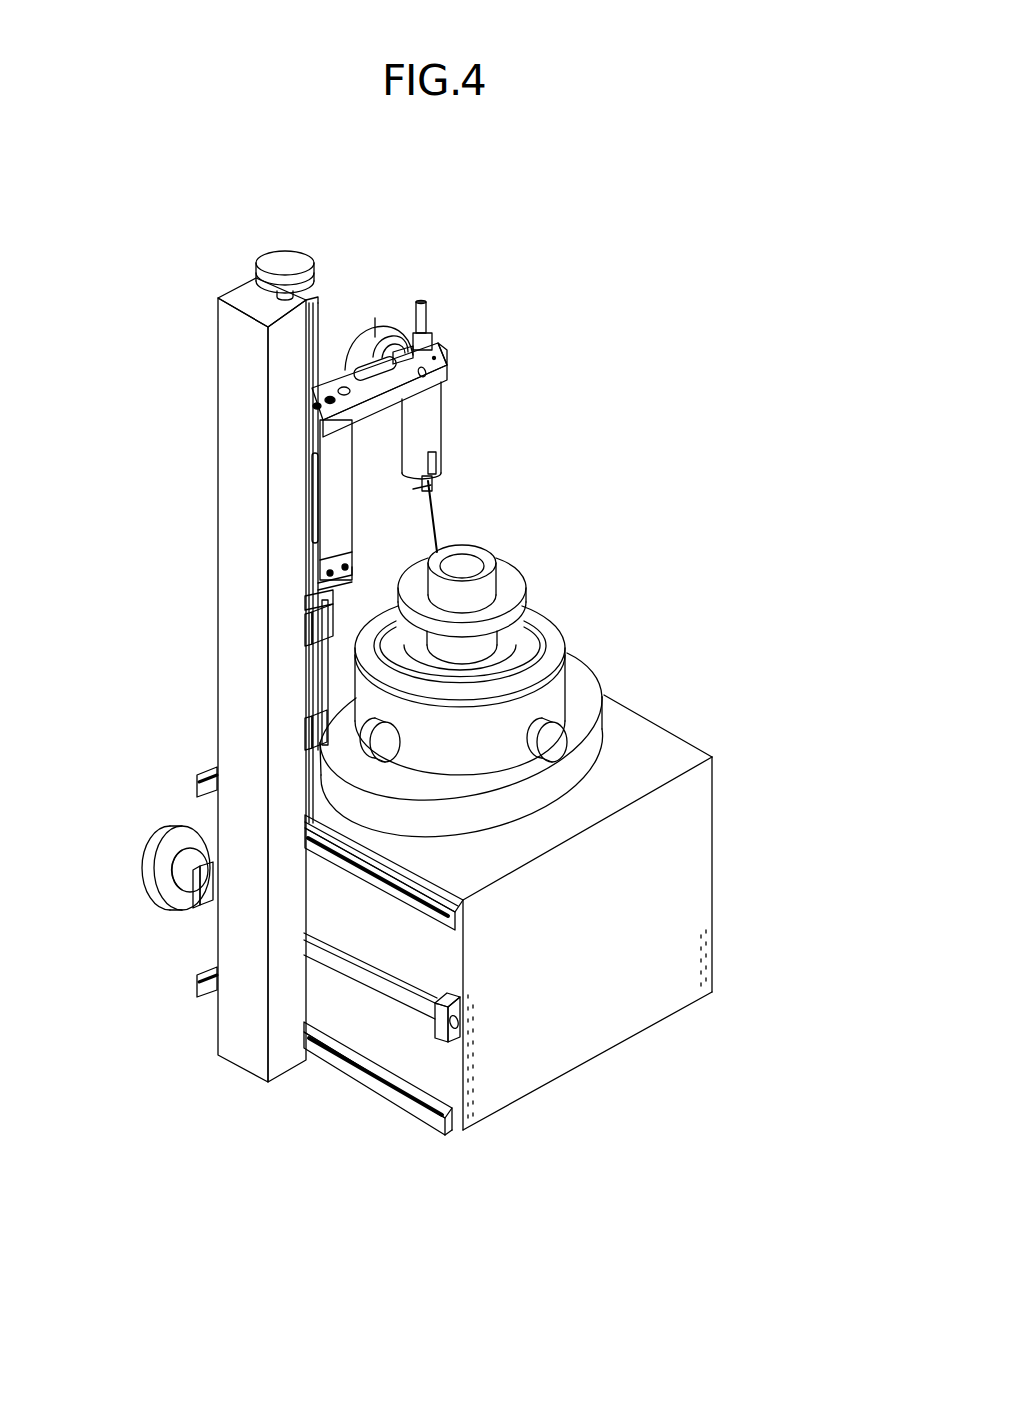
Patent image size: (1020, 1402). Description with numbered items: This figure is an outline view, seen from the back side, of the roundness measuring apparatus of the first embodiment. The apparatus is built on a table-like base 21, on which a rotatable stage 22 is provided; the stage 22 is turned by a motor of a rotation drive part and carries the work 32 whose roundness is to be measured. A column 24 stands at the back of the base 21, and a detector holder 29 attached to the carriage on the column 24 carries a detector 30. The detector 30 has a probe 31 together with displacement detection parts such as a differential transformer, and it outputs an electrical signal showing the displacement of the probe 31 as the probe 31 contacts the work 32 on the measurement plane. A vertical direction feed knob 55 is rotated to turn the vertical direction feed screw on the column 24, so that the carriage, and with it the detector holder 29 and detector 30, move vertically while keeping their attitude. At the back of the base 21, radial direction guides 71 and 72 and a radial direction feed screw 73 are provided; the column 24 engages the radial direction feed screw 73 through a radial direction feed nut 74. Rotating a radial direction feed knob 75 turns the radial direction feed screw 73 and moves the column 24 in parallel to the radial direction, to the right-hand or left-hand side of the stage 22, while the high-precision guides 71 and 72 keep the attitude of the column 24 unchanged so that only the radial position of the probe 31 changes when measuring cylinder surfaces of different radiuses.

The base 21 is at (712, 840).
The stage 22 is at (567, 648).
The column 24 is at (240, 540).
The detector holder 29 is at (345, 370).
The detector 30 is at (440, 425).
The probe 31 is at (433, 528).
The work 32 is at (527, 571).
The vertical direction feed knob 55 is at (280, 250).
The radial direction guide 71 is at (462, 933).
The radial direction guide 72 is at (450, 1130).
The radial direction feed screw 73 is at (396, 992).
The radial direction feed nut 74 is at (300, 918).
The radial direction feed knob 75 is at (172, 837).